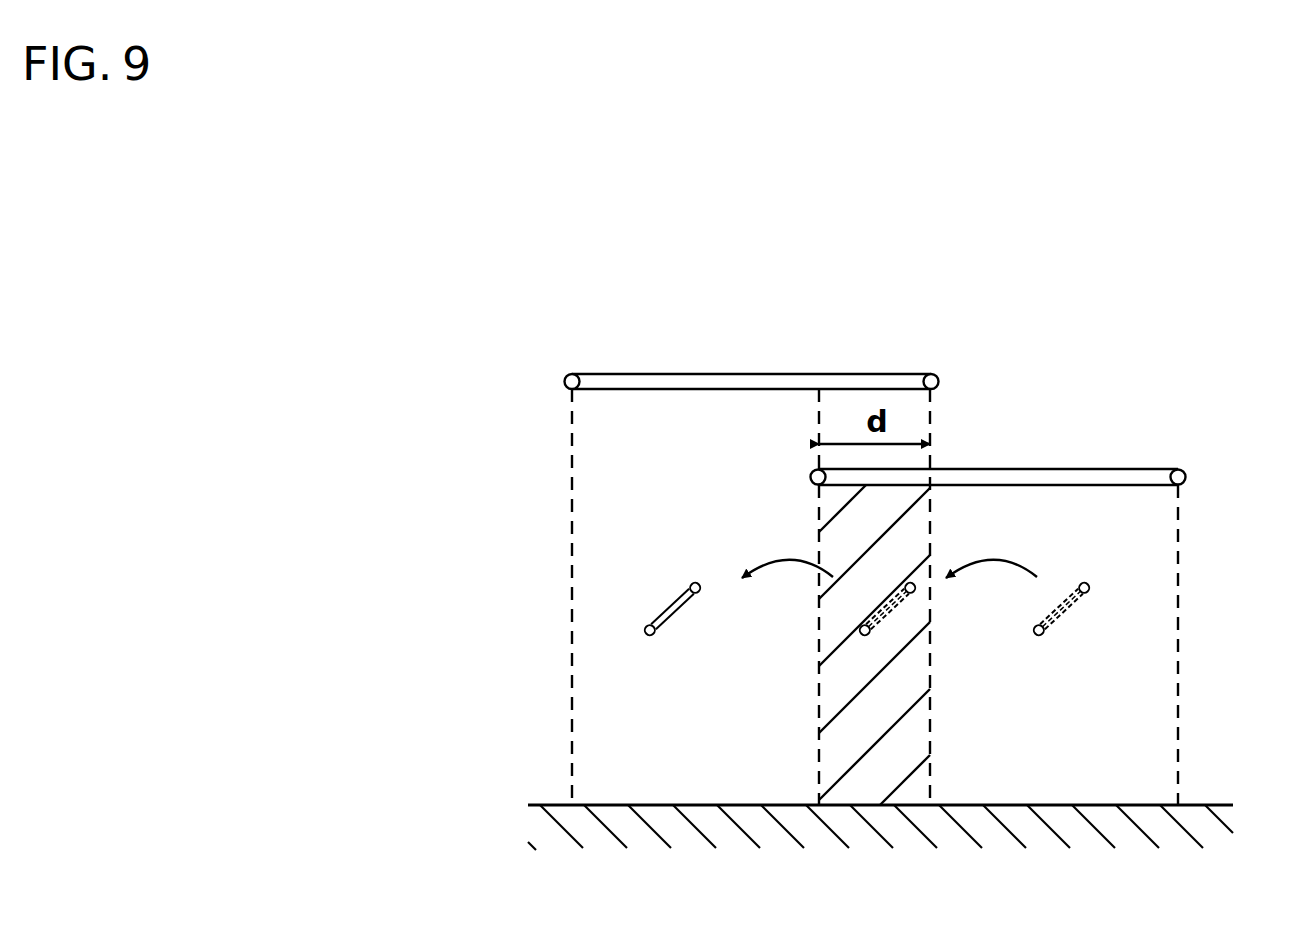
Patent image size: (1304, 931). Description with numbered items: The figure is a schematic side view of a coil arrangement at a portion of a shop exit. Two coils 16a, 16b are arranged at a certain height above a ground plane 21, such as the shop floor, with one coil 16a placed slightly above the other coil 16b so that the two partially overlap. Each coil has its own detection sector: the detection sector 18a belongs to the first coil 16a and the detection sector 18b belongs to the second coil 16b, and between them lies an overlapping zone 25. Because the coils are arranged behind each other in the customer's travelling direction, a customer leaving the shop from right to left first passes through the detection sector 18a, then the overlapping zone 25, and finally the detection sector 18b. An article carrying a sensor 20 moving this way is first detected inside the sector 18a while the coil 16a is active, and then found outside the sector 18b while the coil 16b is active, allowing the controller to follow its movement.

The first coil 16a is at (1058, 468).
The second coil 16b is at (704, 372).
The detection sector 18a is at (1157, 612).
The detection sector 18b is at (602, 471).
The sensor 20 is at (670, 617).
The ground plane 21 is at (553, 805).
The overlapping zone 25 is at (840, 743).